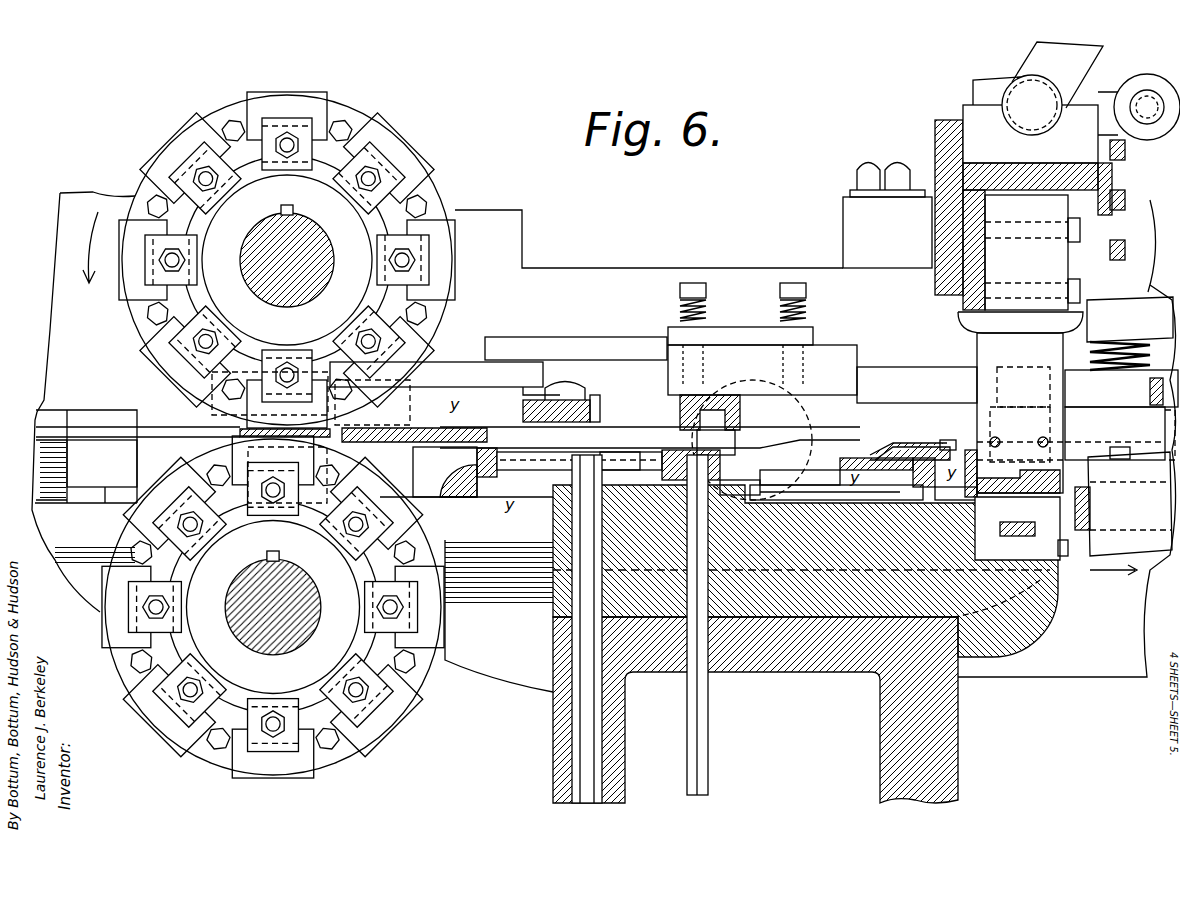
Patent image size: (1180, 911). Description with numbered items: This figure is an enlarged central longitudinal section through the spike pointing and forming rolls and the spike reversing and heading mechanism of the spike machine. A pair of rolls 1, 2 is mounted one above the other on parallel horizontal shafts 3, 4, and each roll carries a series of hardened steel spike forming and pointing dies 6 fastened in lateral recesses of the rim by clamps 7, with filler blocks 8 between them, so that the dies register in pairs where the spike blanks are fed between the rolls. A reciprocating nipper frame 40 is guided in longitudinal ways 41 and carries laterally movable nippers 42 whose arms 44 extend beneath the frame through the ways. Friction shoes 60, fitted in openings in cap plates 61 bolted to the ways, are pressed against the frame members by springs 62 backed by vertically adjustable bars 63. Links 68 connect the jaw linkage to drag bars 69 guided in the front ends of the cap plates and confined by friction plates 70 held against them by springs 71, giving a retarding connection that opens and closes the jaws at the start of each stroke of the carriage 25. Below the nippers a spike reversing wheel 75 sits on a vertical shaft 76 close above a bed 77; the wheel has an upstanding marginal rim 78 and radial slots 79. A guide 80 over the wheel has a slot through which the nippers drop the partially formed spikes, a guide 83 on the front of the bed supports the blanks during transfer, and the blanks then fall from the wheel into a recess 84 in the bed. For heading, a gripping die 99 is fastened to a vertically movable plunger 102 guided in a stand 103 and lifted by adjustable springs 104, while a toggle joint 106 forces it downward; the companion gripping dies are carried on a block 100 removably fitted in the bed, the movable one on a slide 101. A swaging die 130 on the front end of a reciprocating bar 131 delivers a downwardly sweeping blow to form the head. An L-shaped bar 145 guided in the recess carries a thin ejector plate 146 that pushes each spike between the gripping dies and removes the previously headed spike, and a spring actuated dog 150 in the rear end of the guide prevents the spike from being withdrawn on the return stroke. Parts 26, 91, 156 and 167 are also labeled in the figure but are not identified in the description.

The roll 1 is at (269, 260).
The roll 2 is at (273, 607).
The shaft 3 is at (298, 256).
The shaft 4 is at (284, 603).
The spike forming and pointing dies 6 is at (185, 135).
The clamps 7 is at (289, 110).
The filler blocks 8 is at (365, 126).
The carriage 25 is at (86, 456).
The frame 26 is at (604, 442).
The nipper frame 40 is at (740, 395).
The longitudinal ways 41 is at (1120, 433).
The nippers 42 is at (395, 430).
The arms 44 is at (845, 440).
The friction shoes 60 is at (1075, 362).
The cap plates 61 is at (898, 367).
The springs 62 is at (1130, 319).
The vertically adjustable bars 63 is at (1141, 216).
The links 68 is at (455, 362).
The drag bars 69 is at (603, 340).
The friction plates 70 is at (735, 330).
The springs 71 is at (790, 298).
The spike reversing wheel 75 is at (755, 448).
The vertical shaft 76 is at (708, 732).
The bed 77 is at (553, 545).
The marginal rim 78 is at (492, 455).
The radial slots 79 is at (645, 458).
The guide 80 is at (560, 455).
The guide 83 is at (442, 472).
The recess 84 is at (956, 492).
The stud 91 is at (1075, 552).
The gripping die 99 is at (1010, 475).
The block 100 is at (1103, 577).
The slide 101 is at (1062, 540).
The plunger 102 is at (1020, 414).
The stand 103 is at (940, 218).
The adjustable springs 104 is at (1035, 205).
The toggle joint 106 is at (1035, 62).
The swaging die 130 is at (1092, 505).
The reciprocating bar 131 is at (1131, 520).
The L-shaped bar 145 is at (740, 489).
The ejector plate 146 is at (836, 484).
The spring actuated dog 150 is at (968, 450).
The plate 156 is at (615, 455).
The plate 167 is at (800, 477).